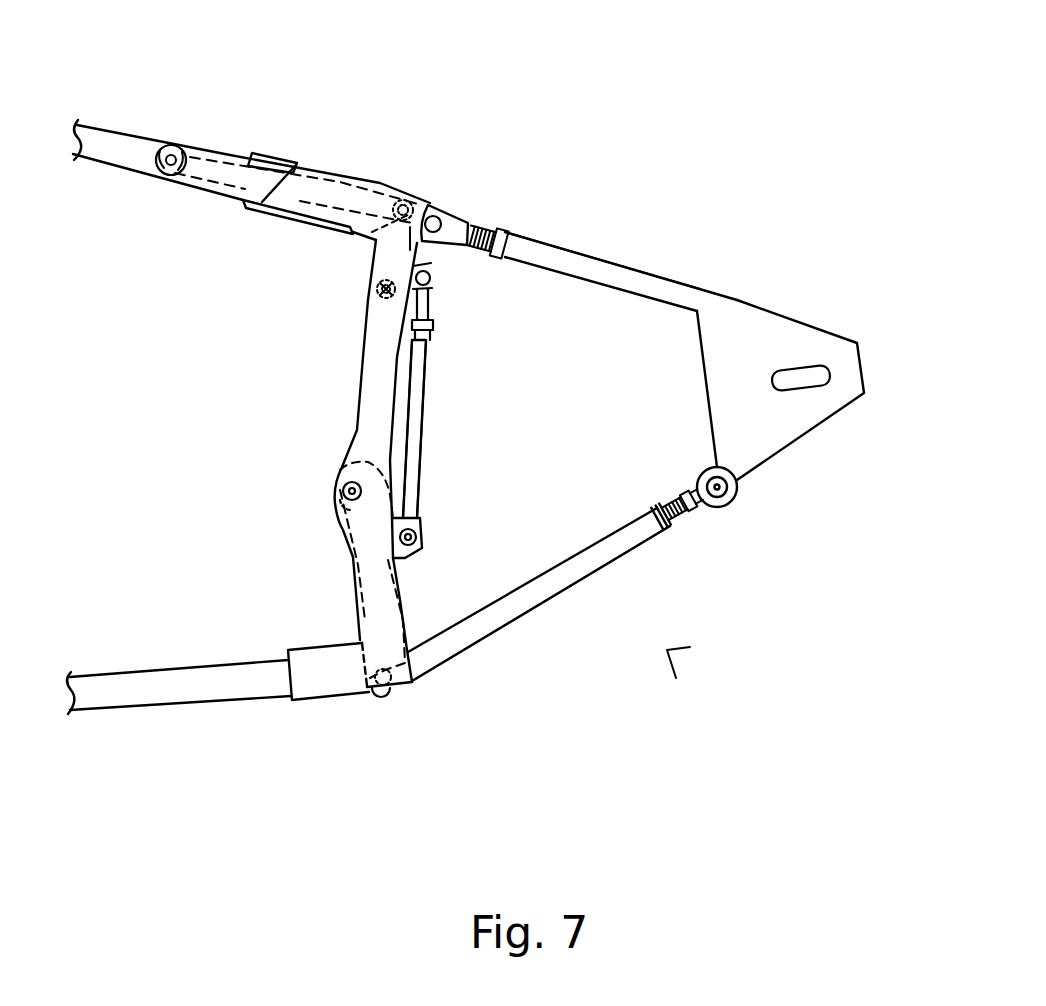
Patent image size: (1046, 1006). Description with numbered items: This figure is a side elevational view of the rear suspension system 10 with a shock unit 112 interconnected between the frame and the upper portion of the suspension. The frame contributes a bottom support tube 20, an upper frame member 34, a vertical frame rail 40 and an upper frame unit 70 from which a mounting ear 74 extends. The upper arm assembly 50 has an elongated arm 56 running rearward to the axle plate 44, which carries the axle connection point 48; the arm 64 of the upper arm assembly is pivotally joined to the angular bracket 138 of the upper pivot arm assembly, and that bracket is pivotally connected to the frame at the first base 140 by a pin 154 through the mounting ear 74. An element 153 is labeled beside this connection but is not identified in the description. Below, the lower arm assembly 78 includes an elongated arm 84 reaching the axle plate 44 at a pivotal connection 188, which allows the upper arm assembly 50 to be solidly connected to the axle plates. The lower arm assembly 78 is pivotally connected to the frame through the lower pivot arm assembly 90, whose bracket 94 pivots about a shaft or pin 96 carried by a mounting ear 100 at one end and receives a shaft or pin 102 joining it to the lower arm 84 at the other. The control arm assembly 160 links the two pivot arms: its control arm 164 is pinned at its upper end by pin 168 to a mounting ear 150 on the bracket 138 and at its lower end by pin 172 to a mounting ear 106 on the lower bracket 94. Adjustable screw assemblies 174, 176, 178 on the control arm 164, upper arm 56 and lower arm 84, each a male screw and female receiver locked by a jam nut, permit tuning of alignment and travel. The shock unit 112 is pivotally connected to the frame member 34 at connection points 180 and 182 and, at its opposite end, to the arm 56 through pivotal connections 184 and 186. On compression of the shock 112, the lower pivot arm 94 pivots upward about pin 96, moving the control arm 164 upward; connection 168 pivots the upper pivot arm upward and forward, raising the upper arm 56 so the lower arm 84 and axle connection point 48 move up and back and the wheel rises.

The rear suspension system 10 is at (667, 650).
The bottom support tube 20 is at (90, 690).
The upper frame member 34 is at (105, 133).
The vertical frame rail 40 is at (379, 358).
The axle plate 44 is at (811, 410).
The axle connection point 48 is at (802, 373).
The upper arm assembly 50 is at (662, 259).
The elongated arm 56 is at (587, 268).
The upper arm assembly arm 64 is at (437, 203).
The upper frame unit 70 is at (271, 150).
The mounting ear 74 is at (358, 263).
The lower arm assembly 78 is at (533, 616).
The elongated arm 84 is at (560, 577).
The lower pivot arm assembly 90 is at (314, 572).
The bracket 94 is at (383, 588).
The shaft or pin 96 is at (340, 478).
The mounting ear 100 is at (345, 454).
The shaft or pin 102 is at (390, 698).
The mounting ear 106 is at (420, 517).
The shock unit 112 is at (293, 188).
The angular bracket 138 is at (358, 240).
The first base 140 is at (317, 313).
The mounting ear 150 is at (434, 263).
The pivot pin 153 is at (463, 151).
The pin 154 is at (376, 297).
The control arm assembly 160 is at (445, 458).
The control arm 164 is at (418, 432).
The pin 168 is at (438, 295).
The pin 172 is at (417, 533).
The adjustable screw assembly 174 is at (430, 330).
The adjustable screw assembly 176 is at (478, 215).
The adjustable screw assembly 178 is at (677, 528).
The connection point 180 is at (180, 145).
The connection point 182 is at (204, 114).
The pivotal connection 184 is at (400, 200).
The pivotal connection 186 is at (400, 162).
The pivotal connection 188 is at (725, 500).